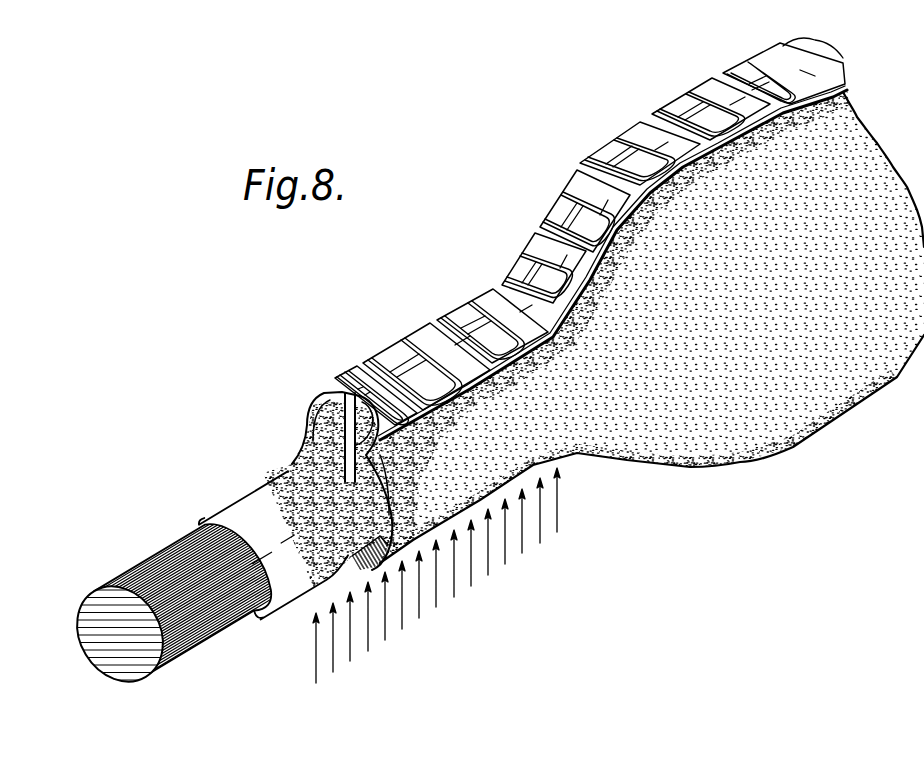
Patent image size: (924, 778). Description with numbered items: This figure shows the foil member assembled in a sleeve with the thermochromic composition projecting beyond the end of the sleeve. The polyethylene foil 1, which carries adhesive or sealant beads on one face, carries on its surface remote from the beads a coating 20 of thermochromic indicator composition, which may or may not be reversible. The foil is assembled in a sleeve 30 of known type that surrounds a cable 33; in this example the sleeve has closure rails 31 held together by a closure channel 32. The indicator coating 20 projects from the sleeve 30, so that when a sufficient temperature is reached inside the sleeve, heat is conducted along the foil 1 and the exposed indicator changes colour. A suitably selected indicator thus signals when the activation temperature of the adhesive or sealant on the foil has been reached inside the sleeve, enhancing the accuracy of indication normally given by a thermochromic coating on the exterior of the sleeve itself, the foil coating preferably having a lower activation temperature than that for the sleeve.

The polyethylene foil 1 is at (233, 511).
The coating of thermochromic indicator composition 20 is at (281, 485).
The sleeve 30 is at (560, 440).
The closure rails 31 is at (322, 405).
The closure channel 32 is at (410, 352).
The cable 33 is at (145, 570).